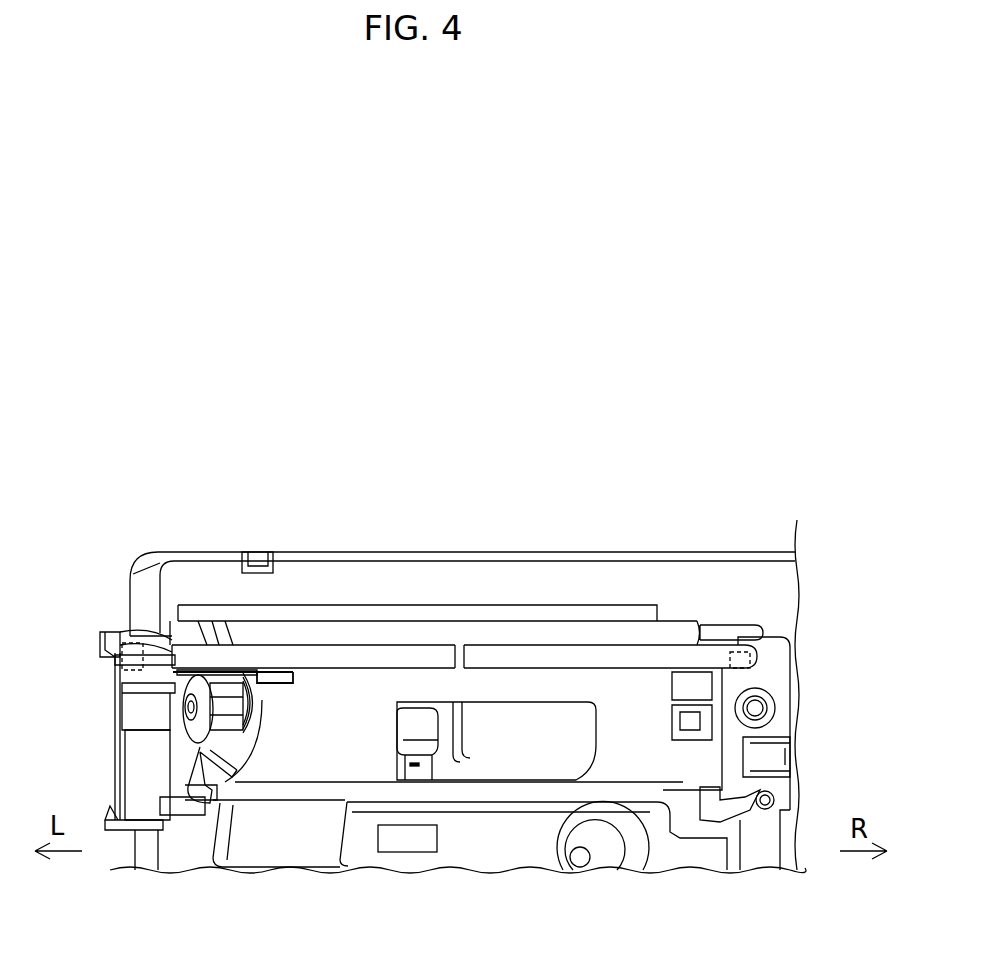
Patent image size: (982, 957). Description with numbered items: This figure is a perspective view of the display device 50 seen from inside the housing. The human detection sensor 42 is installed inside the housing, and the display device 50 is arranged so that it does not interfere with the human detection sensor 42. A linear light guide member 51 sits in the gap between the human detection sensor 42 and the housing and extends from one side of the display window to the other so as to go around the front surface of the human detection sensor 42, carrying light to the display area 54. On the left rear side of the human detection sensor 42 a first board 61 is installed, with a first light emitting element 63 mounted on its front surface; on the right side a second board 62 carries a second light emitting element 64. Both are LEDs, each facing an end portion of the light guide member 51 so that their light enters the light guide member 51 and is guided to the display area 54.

The human detection sensor 42 is at (507, 742).
The display device 50 is at (207, 604).
The light guide member 51 is at (484, 657).
The display area 54 is at (338, 657).
The first board 61 is at (143, 644).
The second board 62 is at (768, 648).
The first light emitting element 63 is at (131, 643).
The second light emitting element 64 is at (752, 656).